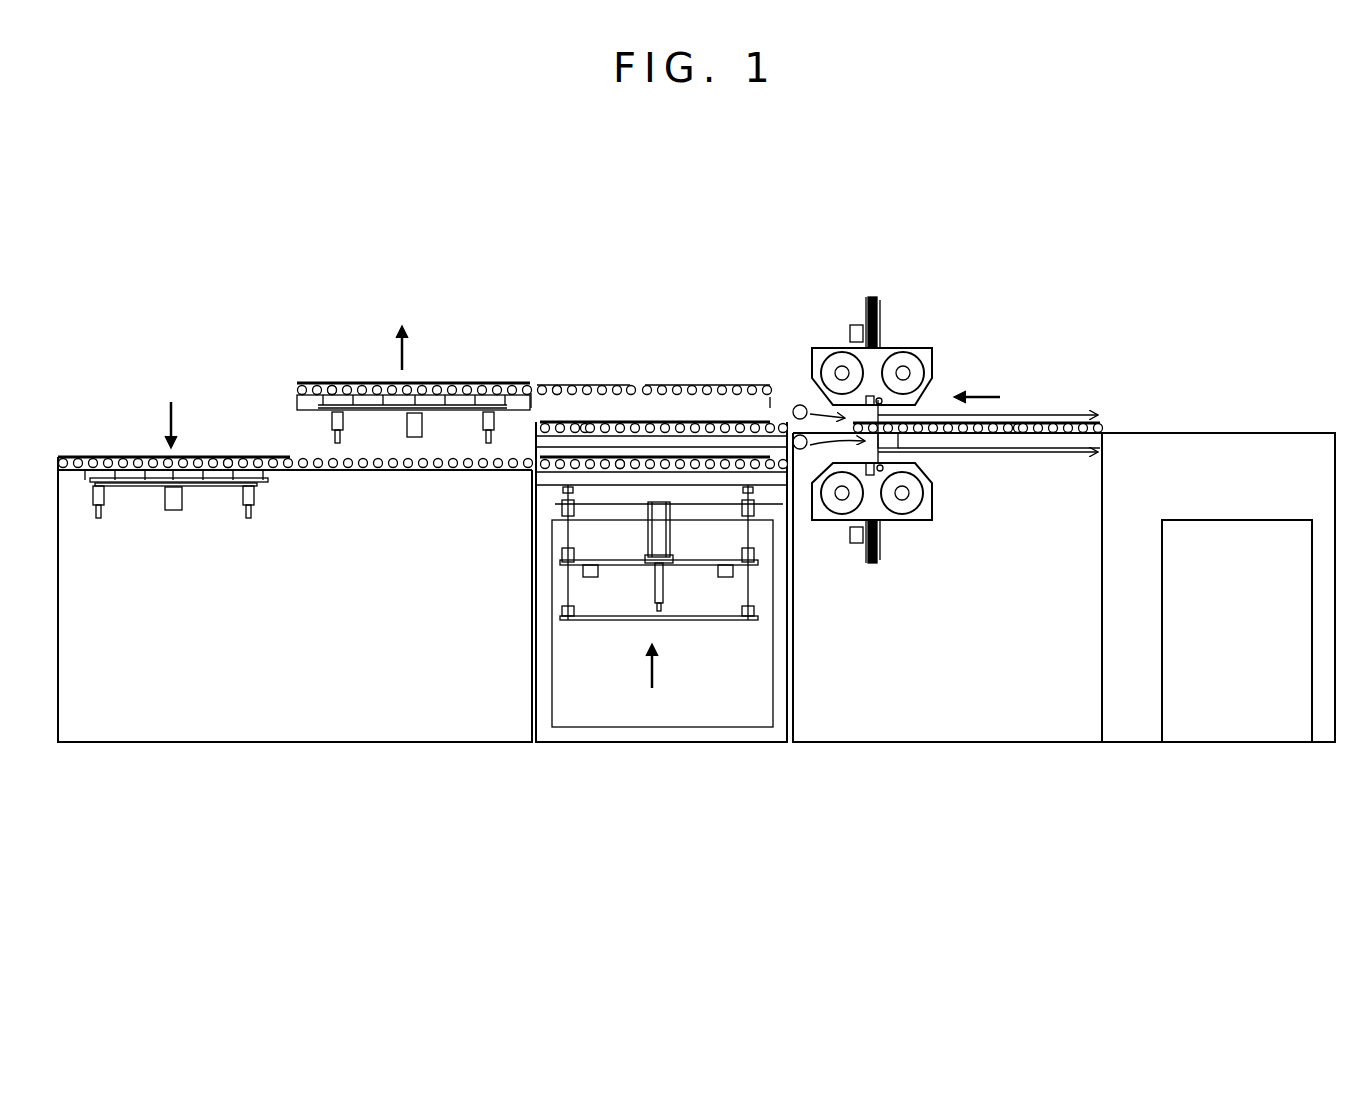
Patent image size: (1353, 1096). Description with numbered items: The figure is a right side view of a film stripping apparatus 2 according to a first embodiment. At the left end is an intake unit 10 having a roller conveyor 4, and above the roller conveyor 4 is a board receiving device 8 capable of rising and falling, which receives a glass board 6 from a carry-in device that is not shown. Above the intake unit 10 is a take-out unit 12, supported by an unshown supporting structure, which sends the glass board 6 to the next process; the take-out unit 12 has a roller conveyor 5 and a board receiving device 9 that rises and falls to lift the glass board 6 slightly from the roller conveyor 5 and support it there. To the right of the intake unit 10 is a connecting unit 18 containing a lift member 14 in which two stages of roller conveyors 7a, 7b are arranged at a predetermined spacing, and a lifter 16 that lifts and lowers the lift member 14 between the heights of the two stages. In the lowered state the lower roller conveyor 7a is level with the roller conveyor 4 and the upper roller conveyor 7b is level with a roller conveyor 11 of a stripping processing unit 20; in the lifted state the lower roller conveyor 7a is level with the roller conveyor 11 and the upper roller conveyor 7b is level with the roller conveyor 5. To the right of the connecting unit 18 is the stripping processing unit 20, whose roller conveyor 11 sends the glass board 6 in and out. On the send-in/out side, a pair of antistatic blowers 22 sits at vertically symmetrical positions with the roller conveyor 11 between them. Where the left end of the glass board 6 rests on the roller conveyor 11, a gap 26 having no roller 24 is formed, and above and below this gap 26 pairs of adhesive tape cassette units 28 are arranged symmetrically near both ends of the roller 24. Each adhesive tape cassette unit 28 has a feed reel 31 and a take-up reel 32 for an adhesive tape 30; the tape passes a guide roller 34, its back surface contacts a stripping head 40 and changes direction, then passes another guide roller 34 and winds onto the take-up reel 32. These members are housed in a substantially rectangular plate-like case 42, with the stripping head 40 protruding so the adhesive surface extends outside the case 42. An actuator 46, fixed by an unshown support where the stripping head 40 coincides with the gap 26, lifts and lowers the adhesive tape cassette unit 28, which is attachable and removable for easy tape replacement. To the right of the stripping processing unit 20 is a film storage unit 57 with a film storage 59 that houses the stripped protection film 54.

The film stripping apparatus 2 is at (1218, 577).
The roller conveyor 4 is at (298, 450).
The roller conveyor 5 is at (292, 388).
The glass board 6 is at (225, 458).
The lower roller conveyor 7a is at (555, 468).
The upper roller conveyor 7b is at (631, 384).
The board receiving device 8 is at (190, 505).
The board receiving device 9 is at (405, 455).
The intake unit 10 is at (338, 718).
The roller conveyor 11 is at (1108, 424).
The take-out unit 12 is at (373, 382).
The lift member 14 is at (657, 378).
The lifter 16 is at (622, 625).
The connecting unit 18 is at (637, 735).
The stripping processing unit 20 is at (940, 715).
The antistatic blower 22 is at (800, 403).
The roller 24 is at (1103, 420).
The gap 26 is at (800, 503).
The adhesive tape cassette unit 28 is at (940, 337).
The adhesive tape 30 is at (880, 347).
The feed reel 31 is at (905, 368).
The take-up reel 32 is at (833, 347).
The guide roller 34 is at (862, 347).
The stripping head 40 is at (917, 378).
The case 42 is at (812, 405).
The actuator 46 is at (880, 297).
The protection film 54 is at (920, 412).
The film storage unit 57 is at (1142, 722).
The film storage 59 is at (1235, 718).